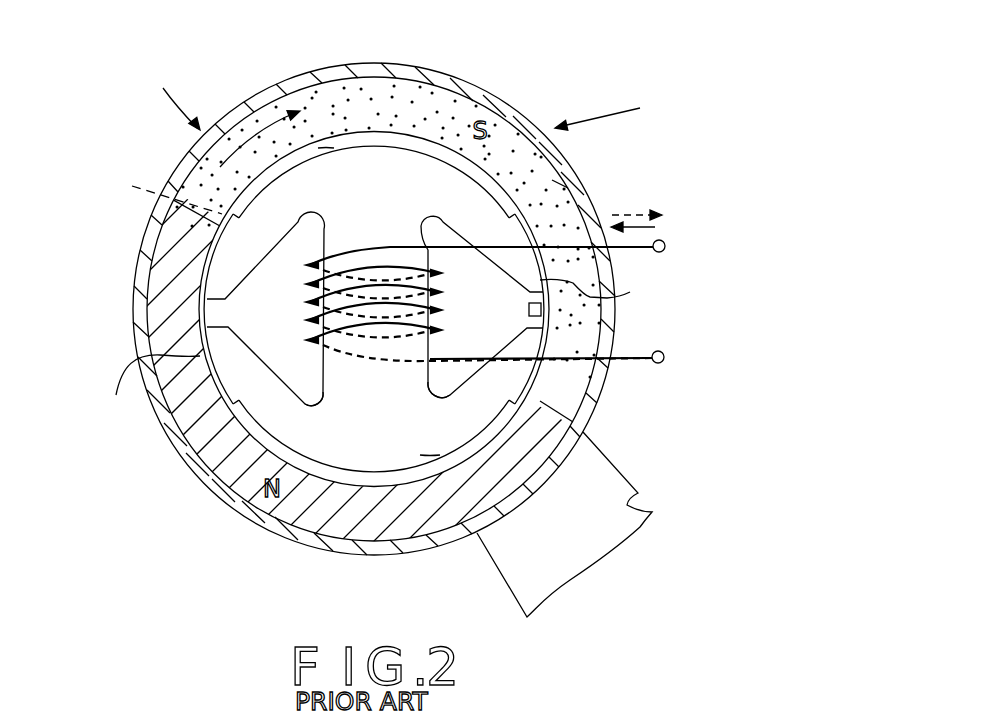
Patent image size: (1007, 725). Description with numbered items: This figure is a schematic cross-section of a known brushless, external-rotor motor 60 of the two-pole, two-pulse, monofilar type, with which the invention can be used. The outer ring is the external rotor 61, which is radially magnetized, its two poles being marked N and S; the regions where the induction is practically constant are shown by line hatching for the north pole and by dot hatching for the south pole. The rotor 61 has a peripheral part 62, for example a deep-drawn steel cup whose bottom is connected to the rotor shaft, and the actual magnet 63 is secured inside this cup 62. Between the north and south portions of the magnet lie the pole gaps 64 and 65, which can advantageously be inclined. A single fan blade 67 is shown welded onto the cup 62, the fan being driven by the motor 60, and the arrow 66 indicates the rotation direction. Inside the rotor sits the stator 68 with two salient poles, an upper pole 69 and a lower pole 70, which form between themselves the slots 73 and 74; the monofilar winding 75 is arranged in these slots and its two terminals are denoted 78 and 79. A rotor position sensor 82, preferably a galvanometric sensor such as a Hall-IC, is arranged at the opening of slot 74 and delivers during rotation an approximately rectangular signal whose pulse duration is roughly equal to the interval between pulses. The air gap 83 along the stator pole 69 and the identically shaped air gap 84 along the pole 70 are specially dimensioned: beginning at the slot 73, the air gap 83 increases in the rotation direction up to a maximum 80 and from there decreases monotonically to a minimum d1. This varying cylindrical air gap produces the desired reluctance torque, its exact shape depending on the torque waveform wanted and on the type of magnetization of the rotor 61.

The motor 60 is at (159, 81).
The external rotor 61 is at (626, 108).
The peripheral part 62 is at (470, 90).
The magnet 63 is at (552, 180).
The pole gap 64 is at (165, 180).
The pole gap 65 is at (547, 376).
The rotation direction 66 is at (246, 112).
The fan blade 67 is at (640, 493).
The stator 68 is at (333, 195).
The upper pole 69 is at (387, 167).
The lower pole 70 is at (430, 455).
The slot 73 is at (308, 385).
The slot 74 is at (447, 375).
The monofilar winding 75 is at (390, 245).
The terminal 78 is at (665, 242).
The terminal 79 is at (664, 352).
The maximum of the air gap 80 is at (215, 210).
The rotor position sensor 82 is at (528, 310).
The air gap 83 is at (326, 148).
The air gap 84 is at (350, 480).
The minimum air gap d1 is at (378, 351).